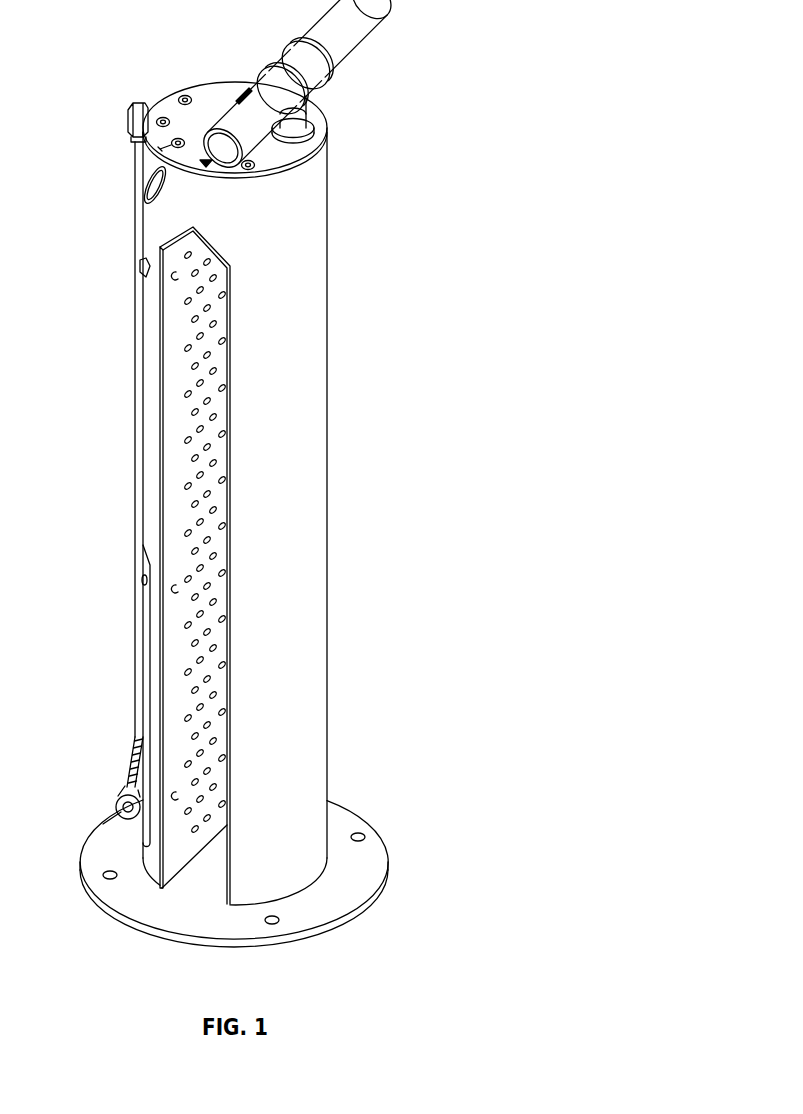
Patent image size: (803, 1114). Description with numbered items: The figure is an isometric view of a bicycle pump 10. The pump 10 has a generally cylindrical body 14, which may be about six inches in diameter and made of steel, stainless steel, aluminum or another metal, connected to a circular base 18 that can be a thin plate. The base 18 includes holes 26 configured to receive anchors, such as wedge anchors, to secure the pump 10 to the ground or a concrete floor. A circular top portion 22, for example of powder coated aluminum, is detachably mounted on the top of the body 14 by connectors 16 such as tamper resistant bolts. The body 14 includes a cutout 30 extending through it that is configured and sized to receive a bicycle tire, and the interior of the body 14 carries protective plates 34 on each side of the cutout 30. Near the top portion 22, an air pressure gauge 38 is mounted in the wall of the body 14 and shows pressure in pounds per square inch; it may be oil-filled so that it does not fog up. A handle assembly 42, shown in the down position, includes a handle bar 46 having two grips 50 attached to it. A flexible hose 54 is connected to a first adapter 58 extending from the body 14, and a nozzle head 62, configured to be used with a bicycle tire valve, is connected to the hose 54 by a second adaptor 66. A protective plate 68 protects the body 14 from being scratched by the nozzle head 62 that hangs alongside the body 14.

The bicycle pump 10 is at (244, 473).
The body 14 is at (305, 330).
The connectors 16 is at (183, 99).
The base 18 is at (264, 873).
The top portion 22 is at (220, 102).
The holes 26 is at (366, 836).
The cutout 30 is at (136, 565).
The protective plates 34 is at (175, 708).
The air pressure gauge 38 is at (148, 187).
The handle assembly 42 is at (296, 103).
The handle bar 46 is at (312, 70).
The grips 50 is at (360, 29).
The flexible hose 54 is at (105, 471).
The first adapter 58 is at (128, 108).
The nozzle head 62 is at (132, 775).
The second adaptor 66 is at (142, 745).
The protective plate 68 is at (143, 645).